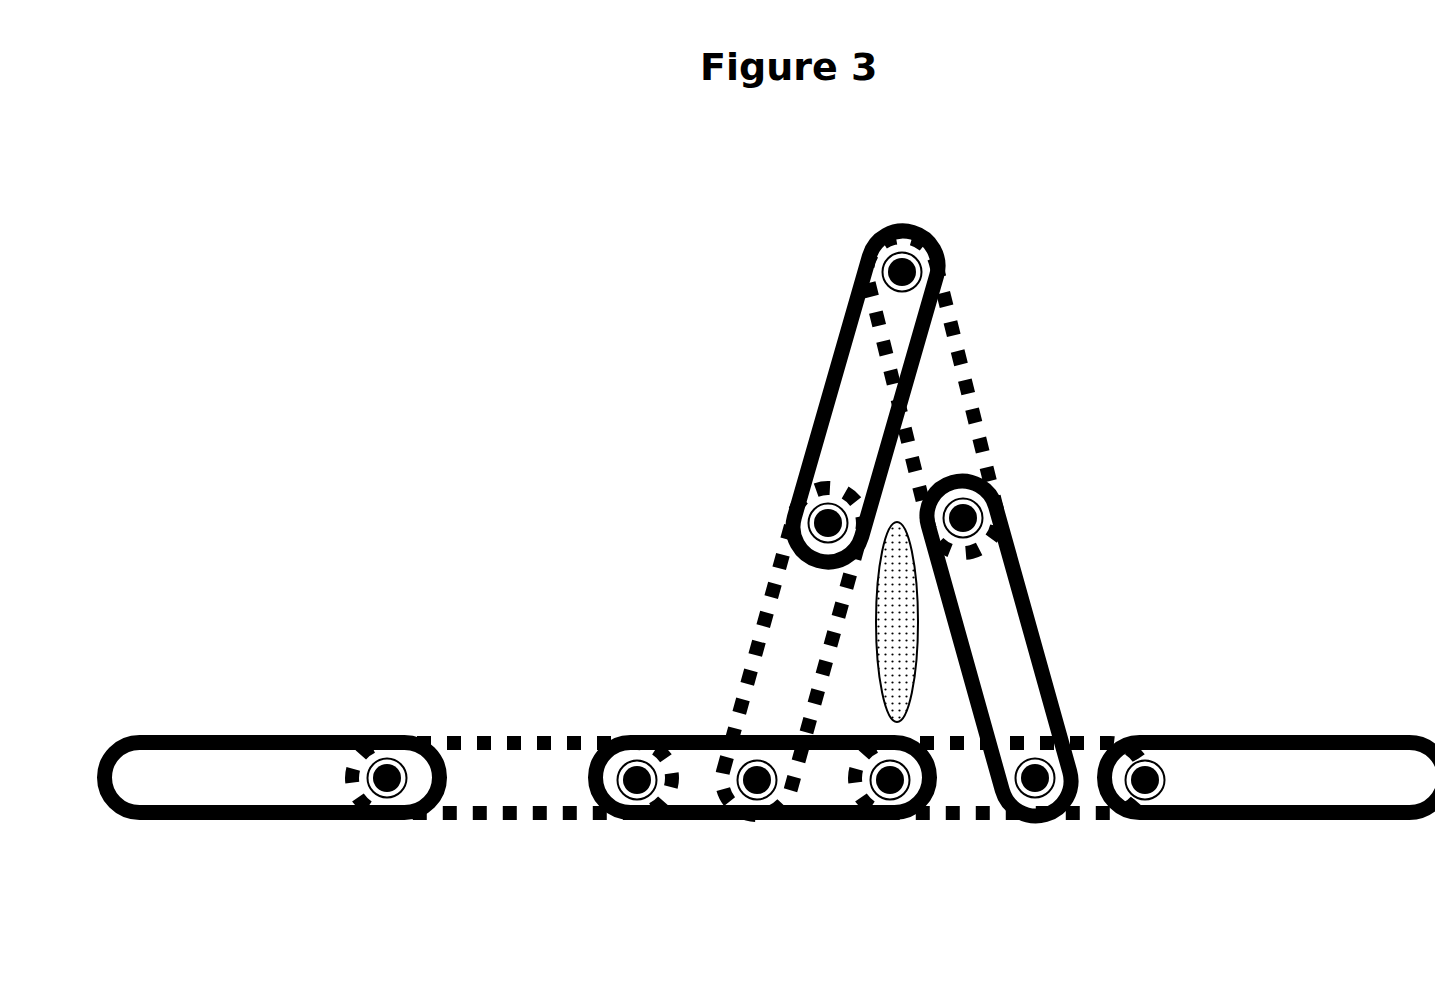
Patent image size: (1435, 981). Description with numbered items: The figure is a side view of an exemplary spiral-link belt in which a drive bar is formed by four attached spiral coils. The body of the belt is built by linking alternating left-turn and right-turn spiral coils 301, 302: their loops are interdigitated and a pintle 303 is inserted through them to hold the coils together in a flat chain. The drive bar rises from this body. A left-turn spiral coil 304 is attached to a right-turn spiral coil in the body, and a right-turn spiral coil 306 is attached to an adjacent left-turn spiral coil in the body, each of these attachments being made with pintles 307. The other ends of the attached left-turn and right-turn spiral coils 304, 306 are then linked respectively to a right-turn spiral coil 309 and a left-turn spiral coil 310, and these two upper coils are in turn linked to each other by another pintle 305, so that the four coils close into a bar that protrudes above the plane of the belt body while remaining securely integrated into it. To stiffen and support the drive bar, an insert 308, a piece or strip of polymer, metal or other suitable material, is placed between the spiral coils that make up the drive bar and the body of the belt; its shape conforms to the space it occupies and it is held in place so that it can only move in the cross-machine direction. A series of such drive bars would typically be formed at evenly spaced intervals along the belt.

The left-turn spiral coil 301 is at (465, 742).
The right-turn spiral coil 302 is at (685, 822).
The pintle 303 is at (632, 772).
The left-turn spiral coil 304 is at (755, 623).
The pintle 305 is at (895, 268).
The right-turn spiral coil 306 is at (1025, 568).
The pintle 307 is at (1007, 807).
The insert 308 is at (920, 623).
The right-turn spiral coil 309 is at (825, 390).
The left-turn spiral coil 310 is at (975, 400).